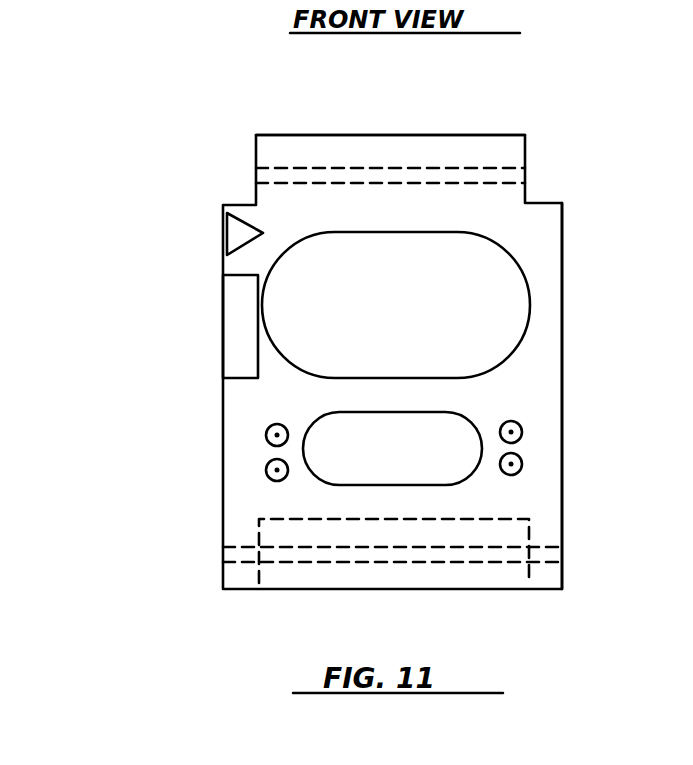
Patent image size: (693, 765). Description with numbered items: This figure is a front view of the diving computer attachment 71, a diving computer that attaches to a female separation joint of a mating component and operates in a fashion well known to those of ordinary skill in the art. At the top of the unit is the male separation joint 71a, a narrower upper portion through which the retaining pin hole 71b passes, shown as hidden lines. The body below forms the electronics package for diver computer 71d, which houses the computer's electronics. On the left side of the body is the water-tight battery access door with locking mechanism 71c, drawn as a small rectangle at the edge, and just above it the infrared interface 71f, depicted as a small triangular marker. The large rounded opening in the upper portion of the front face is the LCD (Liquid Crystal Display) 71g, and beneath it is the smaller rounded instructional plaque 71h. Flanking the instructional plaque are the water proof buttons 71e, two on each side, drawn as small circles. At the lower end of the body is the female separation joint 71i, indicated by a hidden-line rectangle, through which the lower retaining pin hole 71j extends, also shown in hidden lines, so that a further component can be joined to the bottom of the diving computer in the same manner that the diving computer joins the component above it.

The diving computer attachment 71 is at (392, 297).
The male separation joint 71a is at (462, 130).
The retaining pin hole 71b is at (528, 173).
The water-tight battery access door with locking mechanism 71c is at (218, 315).
The electronics package for diver computer 71d is at (513, 369).
The water proof buttons 71e is at (268, 462).
The infrared interface 71f is at (238, 233).
The LCD (Liquid Crystal Display) 71g is at (396, 305).
The instructional plaque 71h is at (392, 448).
The female separation joint 71i is at (440, 533).
The lower retaining pin hole 71j is at (215, 556).